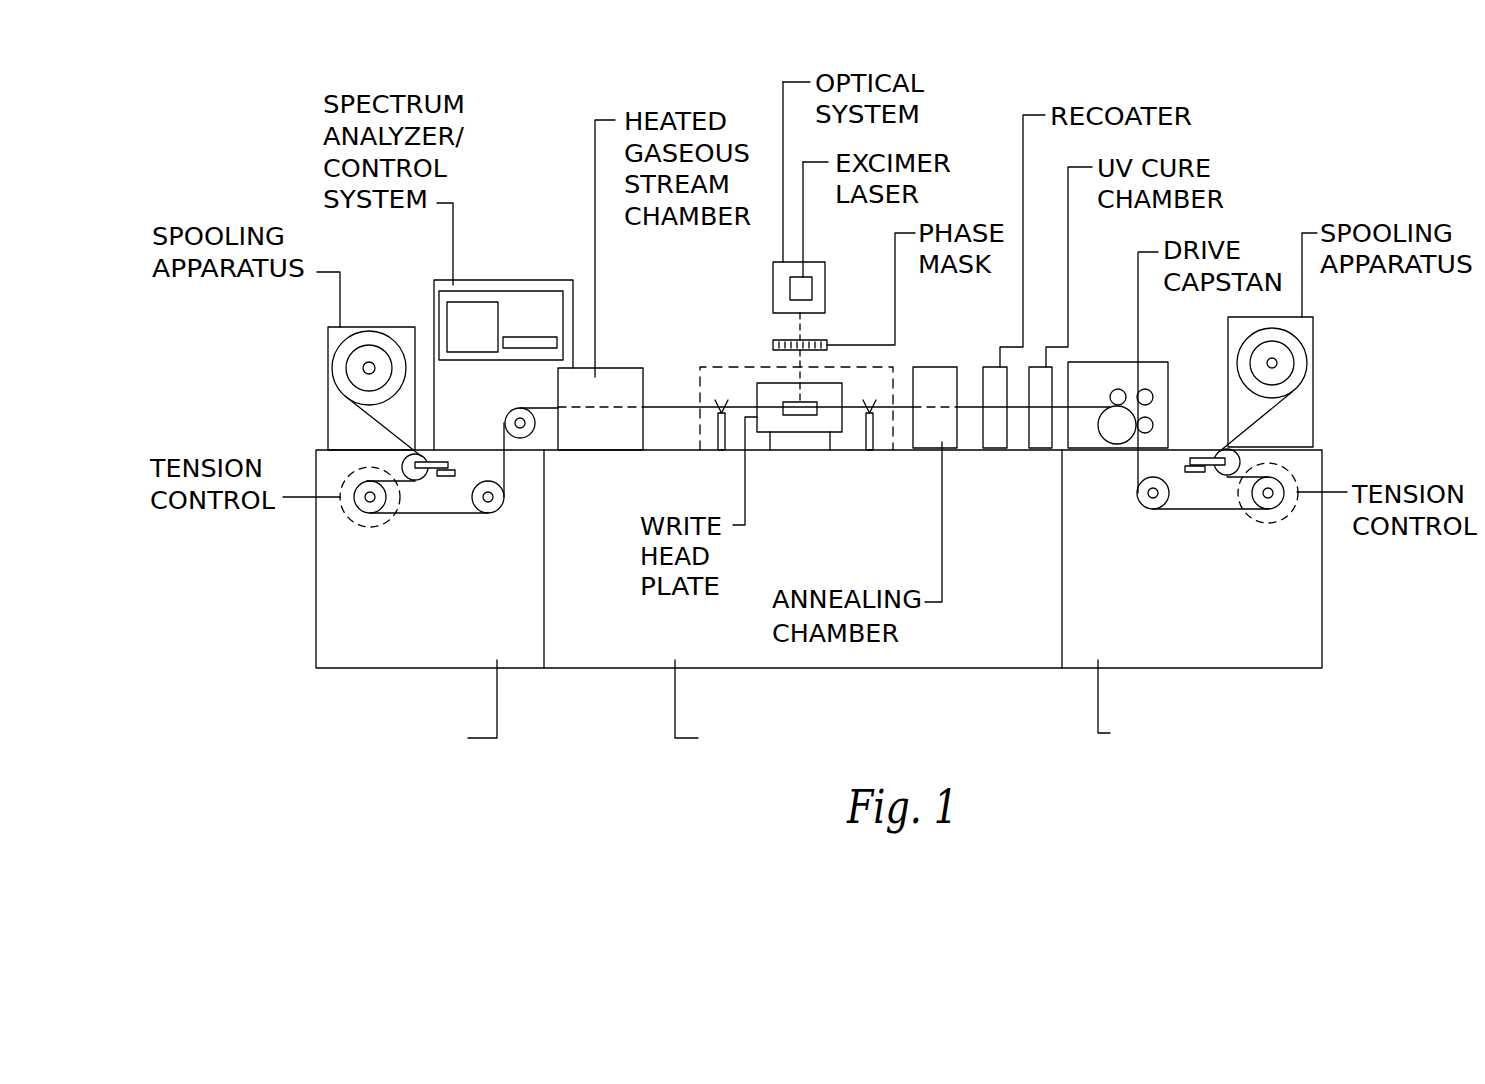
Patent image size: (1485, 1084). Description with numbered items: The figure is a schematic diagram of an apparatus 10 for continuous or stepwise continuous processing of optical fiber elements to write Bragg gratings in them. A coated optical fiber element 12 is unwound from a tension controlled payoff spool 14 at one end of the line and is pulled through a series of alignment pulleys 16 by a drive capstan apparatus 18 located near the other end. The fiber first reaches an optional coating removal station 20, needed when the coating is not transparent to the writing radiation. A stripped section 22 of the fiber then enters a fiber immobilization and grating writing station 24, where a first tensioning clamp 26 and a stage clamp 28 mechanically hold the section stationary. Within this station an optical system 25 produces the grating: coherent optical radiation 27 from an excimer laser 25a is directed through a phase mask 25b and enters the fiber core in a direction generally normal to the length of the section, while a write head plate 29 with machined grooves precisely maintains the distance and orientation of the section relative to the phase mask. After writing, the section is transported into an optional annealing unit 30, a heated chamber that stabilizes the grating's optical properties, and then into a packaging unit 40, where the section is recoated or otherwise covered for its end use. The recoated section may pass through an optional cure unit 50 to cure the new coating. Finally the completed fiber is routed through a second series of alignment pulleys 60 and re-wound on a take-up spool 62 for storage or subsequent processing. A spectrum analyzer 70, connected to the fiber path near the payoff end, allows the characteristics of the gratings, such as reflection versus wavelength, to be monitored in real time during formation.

The apparatus 10 is at (313, 587).
The optical fiber element 12 is at (373, 420).
The payoff spool 14 is at (372, 333).
The alignment pulleys 16 is at (358, 500).
The drive capstan apparatus 18 is at (1103, 362).
The coating removal station 20 is at (620, 368).
The section of the optical fiber 22 is at (770, 405).
The fiber immobilization and grating writing station 24 is at (713, 367).
The optical system 25 is at (773, 270).
The excimer laser 25a is at (805, 292).
The phase mask 25b is at (816, 340).
The first tensioning clamp 26 is at (721, 450).
The coherent optical radiation 27 is at (797, 328).
The stage clamp 28 is at (872, 450).
The write head plate 29 is at (810, 432).
The annealing unit 30 is at (931, 367).
The packaging unit 40 is at (990, 367).
The cure unit 50 is at (1041, 367).
The alignment pulleys 60 is at (1143, 503).
The take-up spool 62 is at (1300, 352).
The spectrum analyzer 70 is at (480, 288).